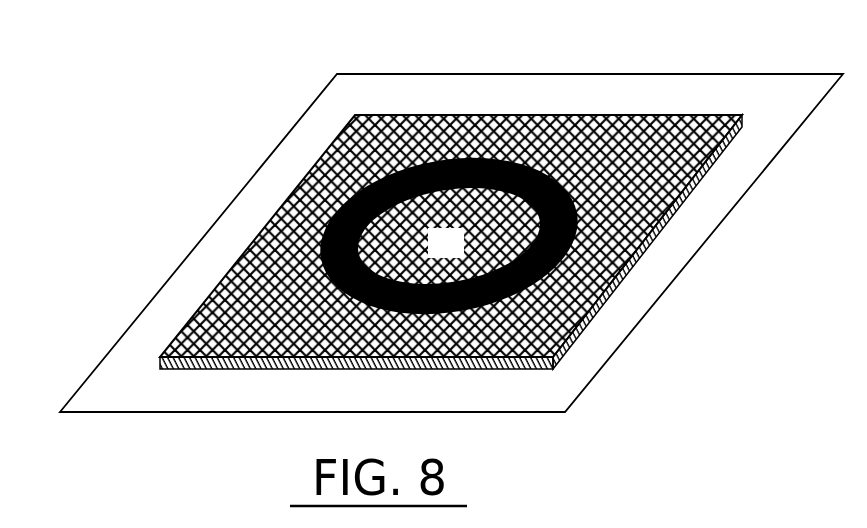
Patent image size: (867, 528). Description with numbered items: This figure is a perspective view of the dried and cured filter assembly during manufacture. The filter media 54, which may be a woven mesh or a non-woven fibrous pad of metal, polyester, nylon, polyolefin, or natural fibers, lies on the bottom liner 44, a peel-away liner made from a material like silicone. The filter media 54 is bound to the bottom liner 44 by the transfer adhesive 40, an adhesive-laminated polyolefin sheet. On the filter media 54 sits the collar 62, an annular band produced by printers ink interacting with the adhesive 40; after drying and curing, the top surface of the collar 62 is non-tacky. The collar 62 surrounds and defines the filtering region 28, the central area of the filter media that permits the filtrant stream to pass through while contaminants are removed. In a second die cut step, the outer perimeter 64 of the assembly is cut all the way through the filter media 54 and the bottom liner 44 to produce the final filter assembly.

The filtering region 28 is at (460, 255).
The transfer adhesive scrim 40 is at (618, 280).
The second liner 44 is at (271, 398).
The filter media 54 is at (607, 126).
The collar 62 is at (322, 251).
The outer perimeter 64 is at (327, 290).